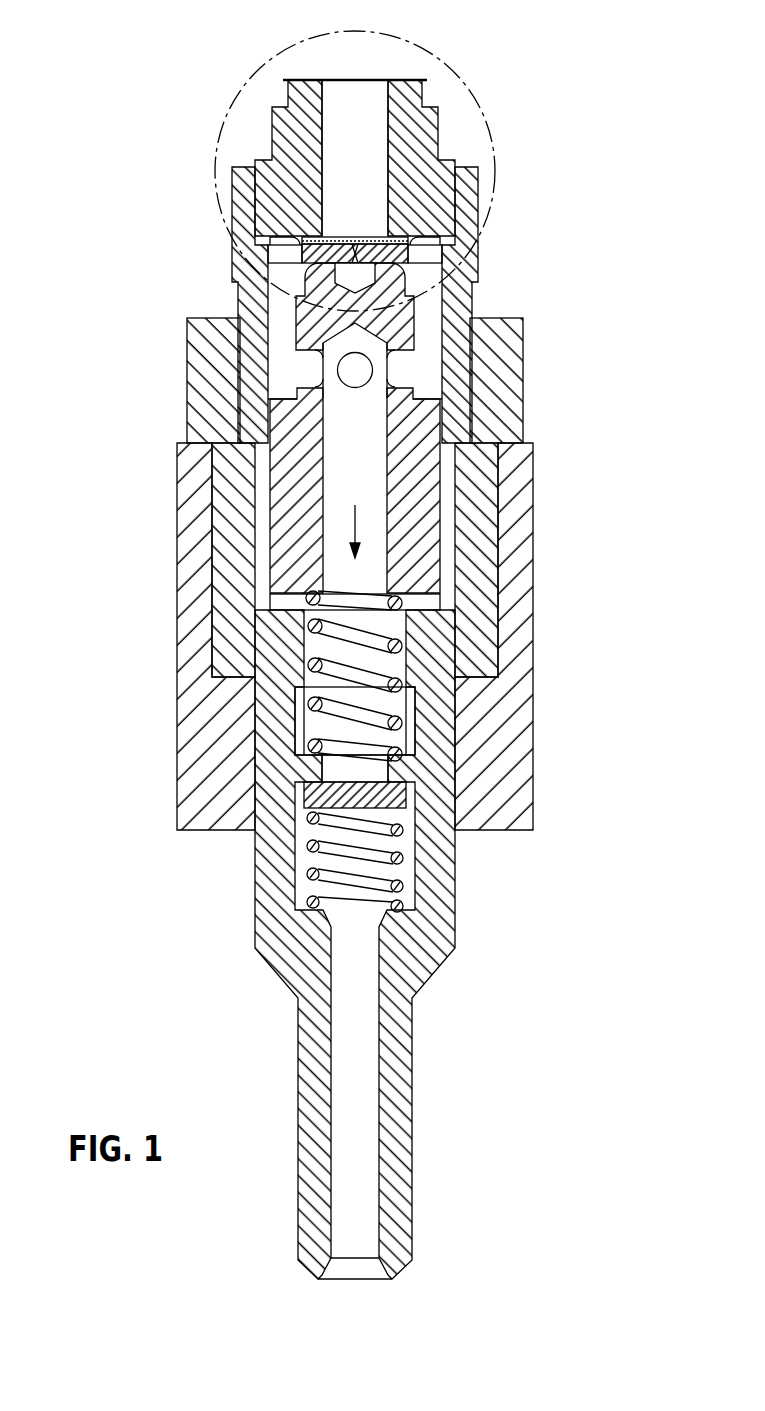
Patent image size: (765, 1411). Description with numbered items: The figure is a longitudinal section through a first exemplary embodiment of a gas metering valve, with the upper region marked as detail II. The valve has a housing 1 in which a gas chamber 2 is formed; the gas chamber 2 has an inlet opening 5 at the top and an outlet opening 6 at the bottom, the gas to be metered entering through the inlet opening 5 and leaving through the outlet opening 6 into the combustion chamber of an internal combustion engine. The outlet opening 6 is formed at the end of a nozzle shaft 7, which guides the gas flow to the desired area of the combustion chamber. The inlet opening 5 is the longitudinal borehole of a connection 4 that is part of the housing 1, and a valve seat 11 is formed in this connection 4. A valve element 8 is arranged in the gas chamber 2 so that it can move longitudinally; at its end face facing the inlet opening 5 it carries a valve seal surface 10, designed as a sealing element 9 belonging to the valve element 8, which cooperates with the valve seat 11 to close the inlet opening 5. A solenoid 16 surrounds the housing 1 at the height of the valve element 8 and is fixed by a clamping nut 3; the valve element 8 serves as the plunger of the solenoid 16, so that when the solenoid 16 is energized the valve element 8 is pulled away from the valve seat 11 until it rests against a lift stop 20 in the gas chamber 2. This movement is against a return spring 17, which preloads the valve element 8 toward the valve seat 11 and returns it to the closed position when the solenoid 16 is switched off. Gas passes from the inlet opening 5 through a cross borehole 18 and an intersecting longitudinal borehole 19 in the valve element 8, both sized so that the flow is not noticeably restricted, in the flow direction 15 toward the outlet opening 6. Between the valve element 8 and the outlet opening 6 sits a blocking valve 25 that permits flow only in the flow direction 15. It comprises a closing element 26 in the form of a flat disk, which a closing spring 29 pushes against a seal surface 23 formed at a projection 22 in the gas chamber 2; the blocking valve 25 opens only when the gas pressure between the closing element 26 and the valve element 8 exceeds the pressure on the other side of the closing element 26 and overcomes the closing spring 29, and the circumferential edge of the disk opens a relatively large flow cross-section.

The housing 1 is at (545, 315).
The gas chamber 2 is at (423, 368).
The clamping nut 3 is at (518, 590).
The connection 4 is at (290, 128).
The inlet opening 5 is at (342, 93).
The outlet opening 6 is at (354, 1267).
The nozzle shaft 7 is at (393, 1083).
The valve element 8 is at (293, 473).
The sealing element 9 is at (440, 263).
The valve seal surface 10 is at (368, 240).
The valve seat 11 is at (308, 234).
The flow direction 15 is at (330, 520).
The solenoid 16 is at (496, 410).
The return spring 17 is at (310, 700).
The cross borehole 18 is at (310, 364).
The longitudinal borehole 19 is at (355, 483).
The lift stop 20 is at (300, 615).
The projection 22 is at (320, 767).
The seal surface 23 is at (410, 760).
The blocking valve 25 is at (270, 797).
The closing element 26 is at (395, 795).
The closing spring 29 is at (305, 878).
The detail region II is at (468, 102).